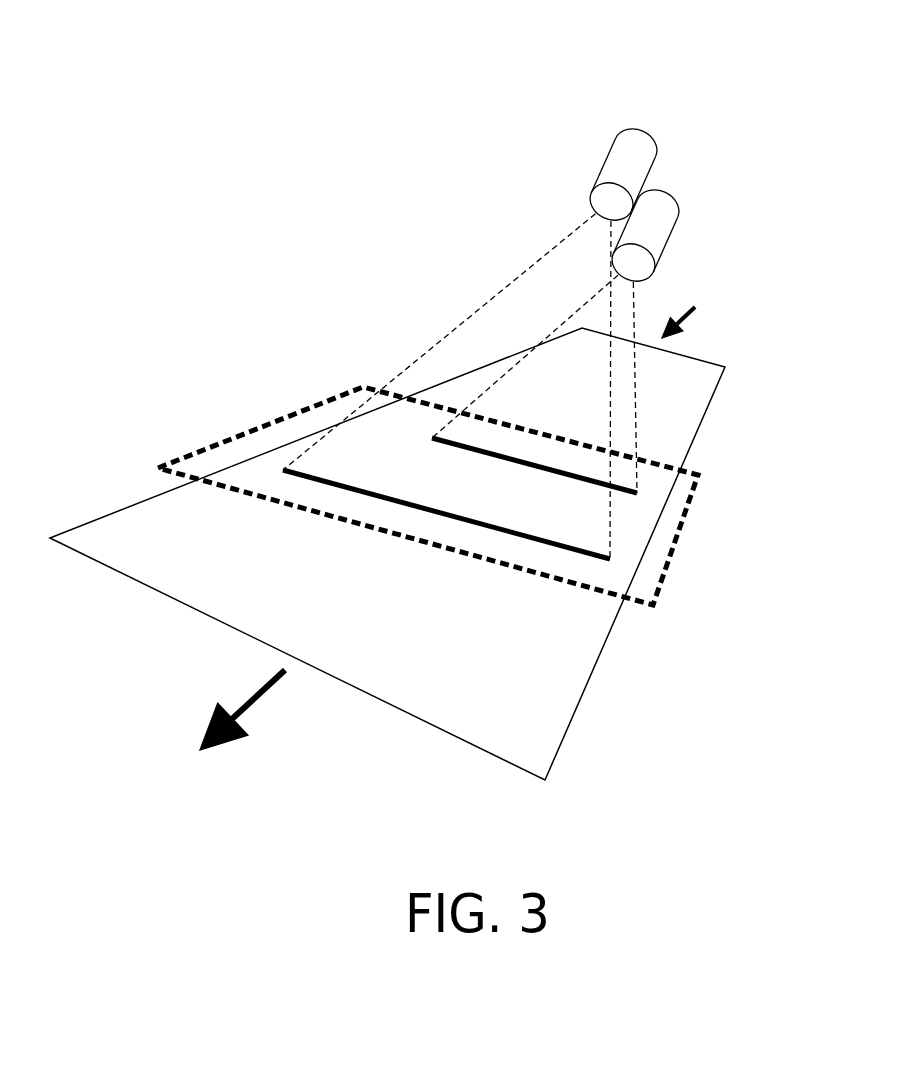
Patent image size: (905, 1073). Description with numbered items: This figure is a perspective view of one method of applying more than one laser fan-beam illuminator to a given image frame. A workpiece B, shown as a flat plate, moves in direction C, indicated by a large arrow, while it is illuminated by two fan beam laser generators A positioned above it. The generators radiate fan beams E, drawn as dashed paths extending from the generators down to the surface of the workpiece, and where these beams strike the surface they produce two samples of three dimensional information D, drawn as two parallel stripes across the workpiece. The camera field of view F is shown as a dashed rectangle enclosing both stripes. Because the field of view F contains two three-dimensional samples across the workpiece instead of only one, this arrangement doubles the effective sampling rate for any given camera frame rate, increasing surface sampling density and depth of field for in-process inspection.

The fan beam laser generators A is at (648, 225).
The workpiece B is at (133, 543).
The direction C is at (416, 553).
The samples of three dimensional information D is at (508, 531).
The fan beams E is at (418, 355).
The camera field of view F is at (680, 533).